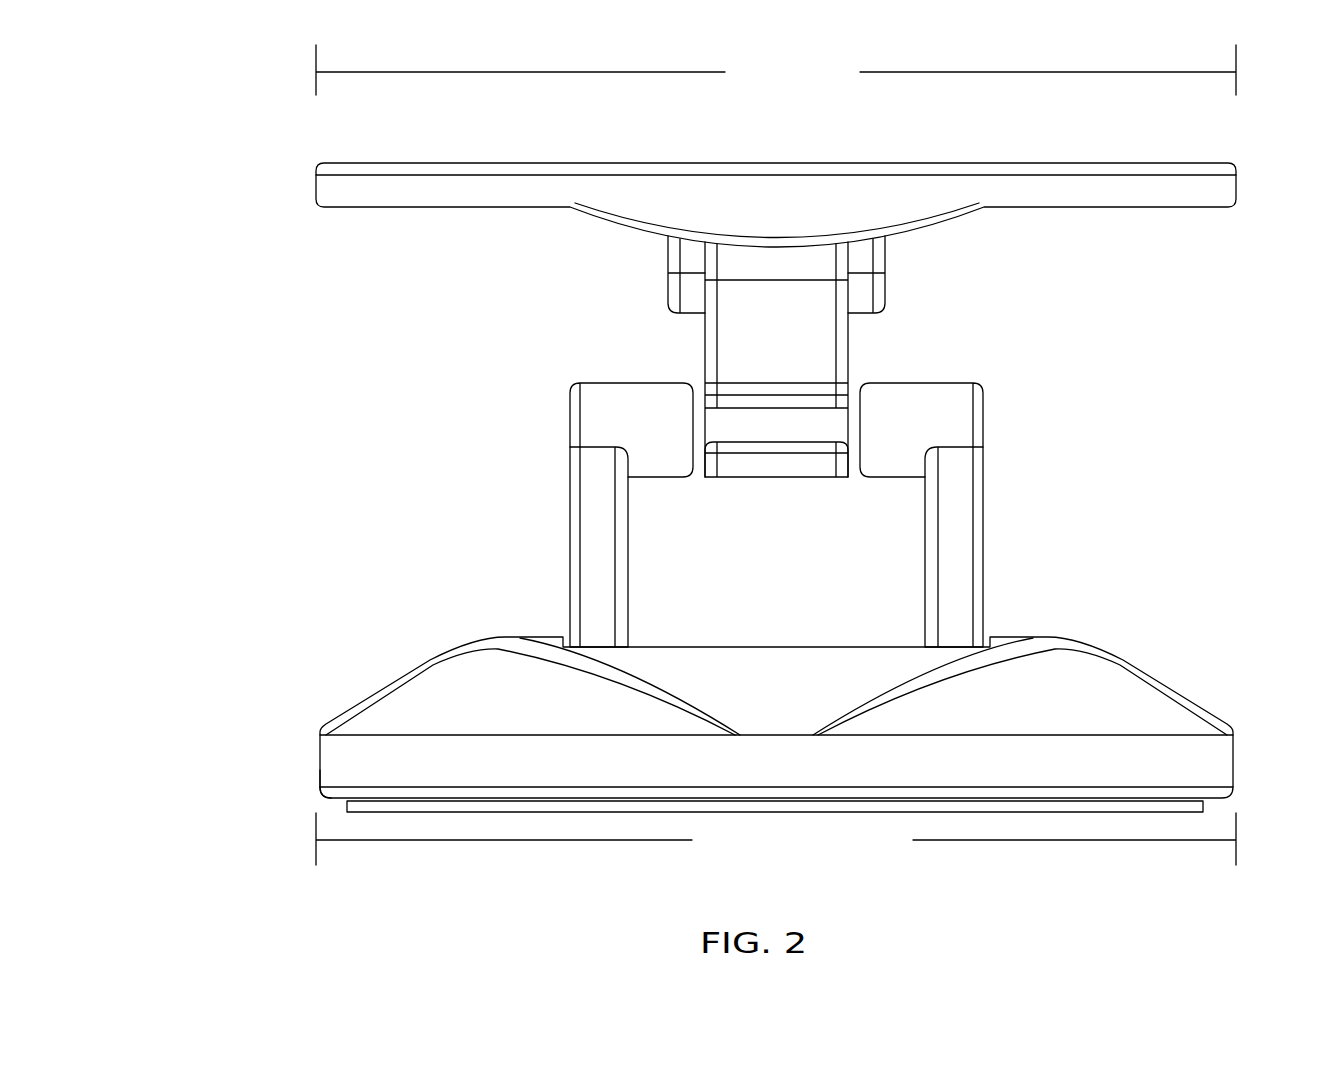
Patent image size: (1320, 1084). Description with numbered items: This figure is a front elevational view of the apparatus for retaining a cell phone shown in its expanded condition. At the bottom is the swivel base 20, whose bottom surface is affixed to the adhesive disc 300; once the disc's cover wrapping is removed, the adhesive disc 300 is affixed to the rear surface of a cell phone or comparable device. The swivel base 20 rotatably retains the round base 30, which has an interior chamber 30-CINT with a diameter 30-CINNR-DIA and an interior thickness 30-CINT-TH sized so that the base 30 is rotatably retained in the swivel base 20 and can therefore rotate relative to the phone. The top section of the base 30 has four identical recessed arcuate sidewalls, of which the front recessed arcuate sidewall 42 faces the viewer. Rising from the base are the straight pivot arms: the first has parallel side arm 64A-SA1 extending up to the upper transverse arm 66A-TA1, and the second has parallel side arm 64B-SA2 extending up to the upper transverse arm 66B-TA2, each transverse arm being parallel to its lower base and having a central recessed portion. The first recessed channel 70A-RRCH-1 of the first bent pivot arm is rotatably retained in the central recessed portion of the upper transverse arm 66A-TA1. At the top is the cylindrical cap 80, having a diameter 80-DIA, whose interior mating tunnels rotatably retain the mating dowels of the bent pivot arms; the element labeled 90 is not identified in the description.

The diameter of cylindrical cap 80-DIA is at (776, 70).
The top surface layer of cap plate 90 is at (792, 159).
The cylindrical cap 80 is at (902, 210).
The first recessed channel 70A-RRCH-1 is at (849, 391).
The upper transverse arm 66A-TA1 is at (588, 402).
The upper transverse arm 66B-TA2 is at (960, 422).
The parallel side arm 64A-SA1 is at (590, 537).
The parallel side arm 64B-SA2 is at (960, 555).
The front recessed arcuate sidewall 42 is at (785, 670).
The base 30 is at (1240, 744).
The swivel base 20 is at (1225, 793).
The adhesive disc 300 is at (1208, 807).
The interior chamber 30-CINT is at (338, 790).
The interior thickness 30-CINT-TH is at (325, 797).
The diameter of interior chamber 30-CINNR-DIA is at (776, 839).